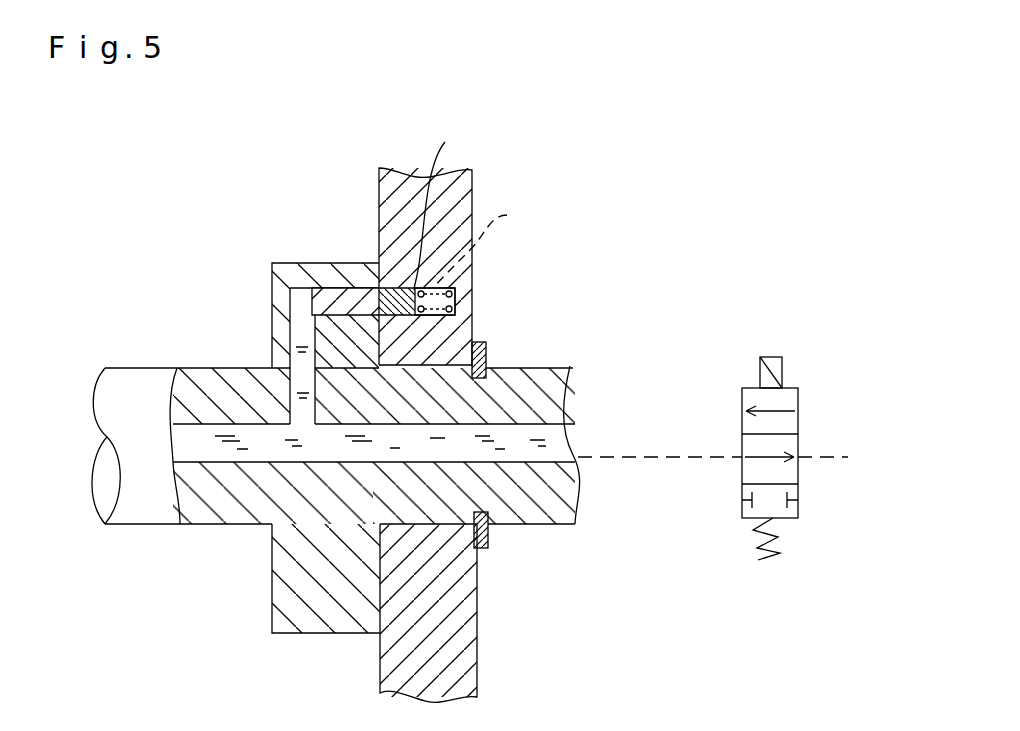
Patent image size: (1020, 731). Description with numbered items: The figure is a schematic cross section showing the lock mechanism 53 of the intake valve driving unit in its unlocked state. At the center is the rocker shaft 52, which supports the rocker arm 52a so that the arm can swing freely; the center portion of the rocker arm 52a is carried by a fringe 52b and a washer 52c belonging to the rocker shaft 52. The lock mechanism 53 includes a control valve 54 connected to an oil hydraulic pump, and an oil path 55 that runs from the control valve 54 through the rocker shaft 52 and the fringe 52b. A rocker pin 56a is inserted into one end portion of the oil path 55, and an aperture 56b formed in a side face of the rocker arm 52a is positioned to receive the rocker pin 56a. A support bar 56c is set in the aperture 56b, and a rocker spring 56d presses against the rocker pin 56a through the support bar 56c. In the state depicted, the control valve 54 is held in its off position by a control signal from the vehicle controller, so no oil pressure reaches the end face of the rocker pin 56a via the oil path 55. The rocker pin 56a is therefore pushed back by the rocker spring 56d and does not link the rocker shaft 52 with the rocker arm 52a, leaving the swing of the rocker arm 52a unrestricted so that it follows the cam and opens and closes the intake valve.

The rocker shaft 52 is at (553, 530).
The rocker arm 52a is at (460, 661).
The fringe 52b is at (272, 333).
The washer 52c is at (482, 550).
The lock mechanism 53 is at (320, 250).
The control valve 54 is at (797, 398).
The oil path 55 is at (575, 443).
The rocker pin 56a is at (353, 297).
The aperture 56b is at (455, 297).
The support bar 56c is at (458, 202).
The rocker spring 56d is at (497, 237).